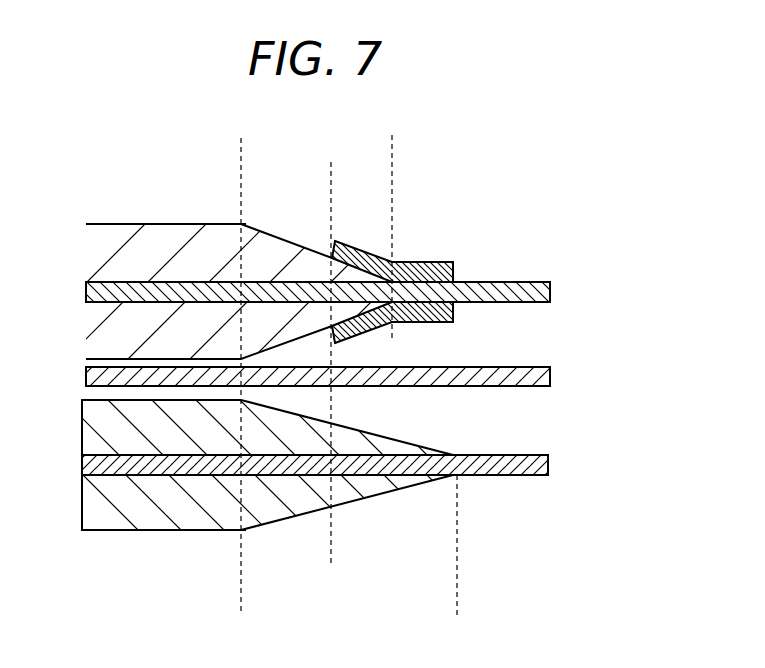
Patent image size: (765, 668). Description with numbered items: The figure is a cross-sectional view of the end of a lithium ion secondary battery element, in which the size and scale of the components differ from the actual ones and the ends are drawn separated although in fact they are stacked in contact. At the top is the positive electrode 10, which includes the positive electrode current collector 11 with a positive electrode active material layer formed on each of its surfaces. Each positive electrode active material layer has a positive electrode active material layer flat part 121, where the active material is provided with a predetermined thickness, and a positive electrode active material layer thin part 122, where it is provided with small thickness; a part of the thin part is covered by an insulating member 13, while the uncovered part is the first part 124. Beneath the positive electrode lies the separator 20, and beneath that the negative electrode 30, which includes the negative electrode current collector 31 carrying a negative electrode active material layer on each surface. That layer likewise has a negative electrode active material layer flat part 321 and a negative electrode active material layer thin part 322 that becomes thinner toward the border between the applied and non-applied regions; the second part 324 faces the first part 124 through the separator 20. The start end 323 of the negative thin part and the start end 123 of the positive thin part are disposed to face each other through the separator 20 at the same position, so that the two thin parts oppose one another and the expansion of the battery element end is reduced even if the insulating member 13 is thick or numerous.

The positive electrode 10 is at (578, 225).
The positive electrode current collector 11 is at (86, 295).
The insulating member 13 is at (457, 263).
The separator 20 is at (86, 379).
The negative electrode 30 is at (578, 395).
The negative electrode current collector 31 is at (86, 465).
The positive electrode active material layer flat part 121 is at (241, 181).
The positive electrode active material layer thin part 122 is at (241, 152).
The start end of the positive electrode active material layer thin part 123 is at (245, 223).
The first part 124 is at (241, 181).
The negative electrode active material layer flat part 321 is at (241, 561).
The negative electrode active material layer thin part 322 is at (241, 597).
The start end of the negative electrode active material layer thin part 323 is at (247, 532).
The second part 324 is at (241, 561).